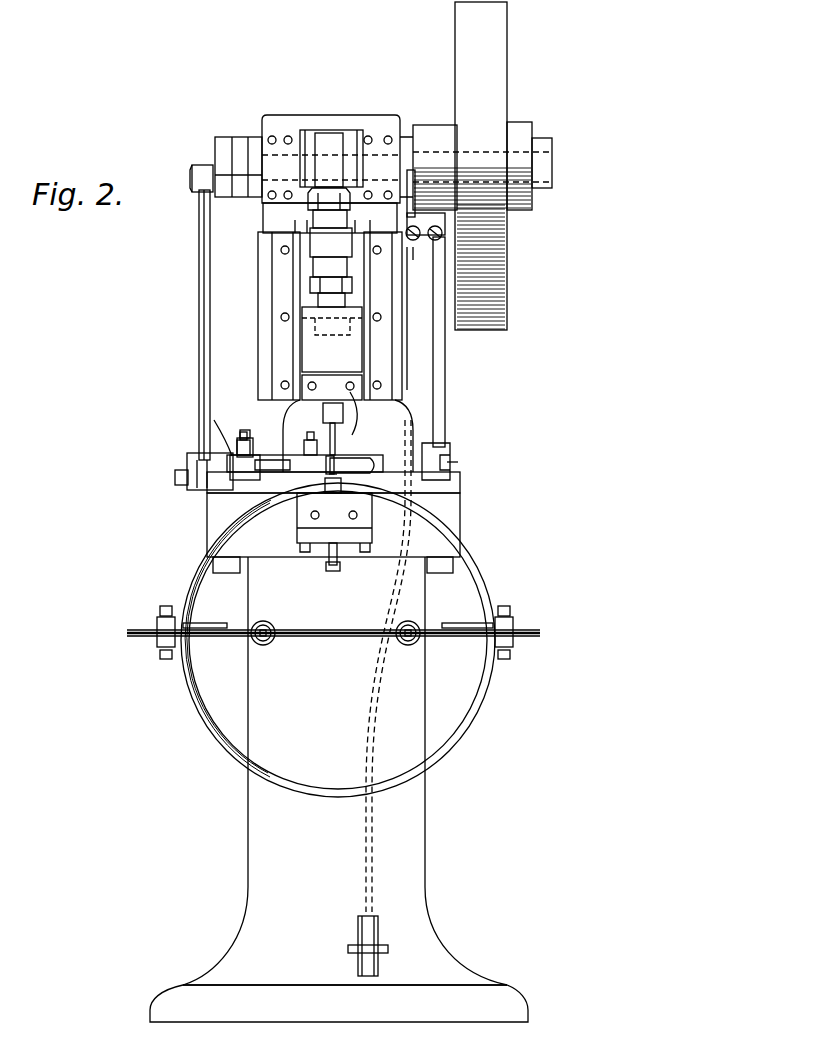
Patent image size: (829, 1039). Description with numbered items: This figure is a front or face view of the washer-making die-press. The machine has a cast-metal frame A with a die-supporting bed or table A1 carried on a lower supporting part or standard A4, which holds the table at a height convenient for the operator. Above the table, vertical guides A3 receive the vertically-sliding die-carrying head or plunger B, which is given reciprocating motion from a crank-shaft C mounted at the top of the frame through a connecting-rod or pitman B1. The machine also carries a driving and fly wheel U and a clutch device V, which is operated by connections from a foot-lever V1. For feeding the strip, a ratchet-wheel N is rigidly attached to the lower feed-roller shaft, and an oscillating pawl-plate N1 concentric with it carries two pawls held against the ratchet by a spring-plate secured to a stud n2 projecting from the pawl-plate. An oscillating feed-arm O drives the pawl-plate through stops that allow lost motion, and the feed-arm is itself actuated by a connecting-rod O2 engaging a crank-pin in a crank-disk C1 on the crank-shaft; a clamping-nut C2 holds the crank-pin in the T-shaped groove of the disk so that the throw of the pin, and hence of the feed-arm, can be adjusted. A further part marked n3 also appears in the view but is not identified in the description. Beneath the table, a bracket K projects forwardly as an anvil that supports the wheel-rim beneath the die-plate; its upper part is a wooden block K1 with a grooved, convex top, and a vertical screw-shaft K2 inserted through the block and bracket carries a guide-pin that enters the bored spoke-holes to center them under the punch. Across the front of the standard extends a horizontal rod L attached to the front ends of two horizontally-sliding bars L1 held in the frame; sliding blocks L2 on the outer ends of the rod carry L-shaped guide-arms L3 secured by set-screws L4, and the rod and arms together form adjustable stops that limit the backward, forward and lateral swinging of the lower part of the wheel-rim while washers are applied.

The cast-metal frame A is at (326, 122).
The die-supporting bed or table A1 is at (333, 486).
The vertical guides A3 is at (330, 316).
The lower supporting part or standard A4 is at (339, 789).
The die-carrying head or plunger B is at (332, 353).
The connecting-rod or pitman B1 is at (330, 247).
The crank-shaft C is at (408, 168).
The crank-disk C1 is at (245, 143).
The clamping-nut C2 is at (210, 165).
The driving and fly wheel U is at (472, 166).
The clutch device V is at (438, 245).
The foot-lever V1 is at (380, 949).
The connecting-rod O2 is at (199, 326).
The oscillating feed-arm O is at (223, 437).
The ratchet-wheel N is at (210, 488).
The oscillating pawl-plate N1 is at (242, 438).
The stud n2 is at (345, 424).
The bolts n3 is at (331, 386).
The bracket K is at (372, 533).
The wooden block K1 is at (337, 489).
The screw-shaft K2 is at (338, 558).
The horizontal rod L is at (303, 637).
The horizontally-sliding bars L1 is at (258, 641).
The sliding blocks L2 is at (527, 618).
The L-shaped guide-arms L3 is at (520, 652).
The set-screws L4 is at (167, 607).